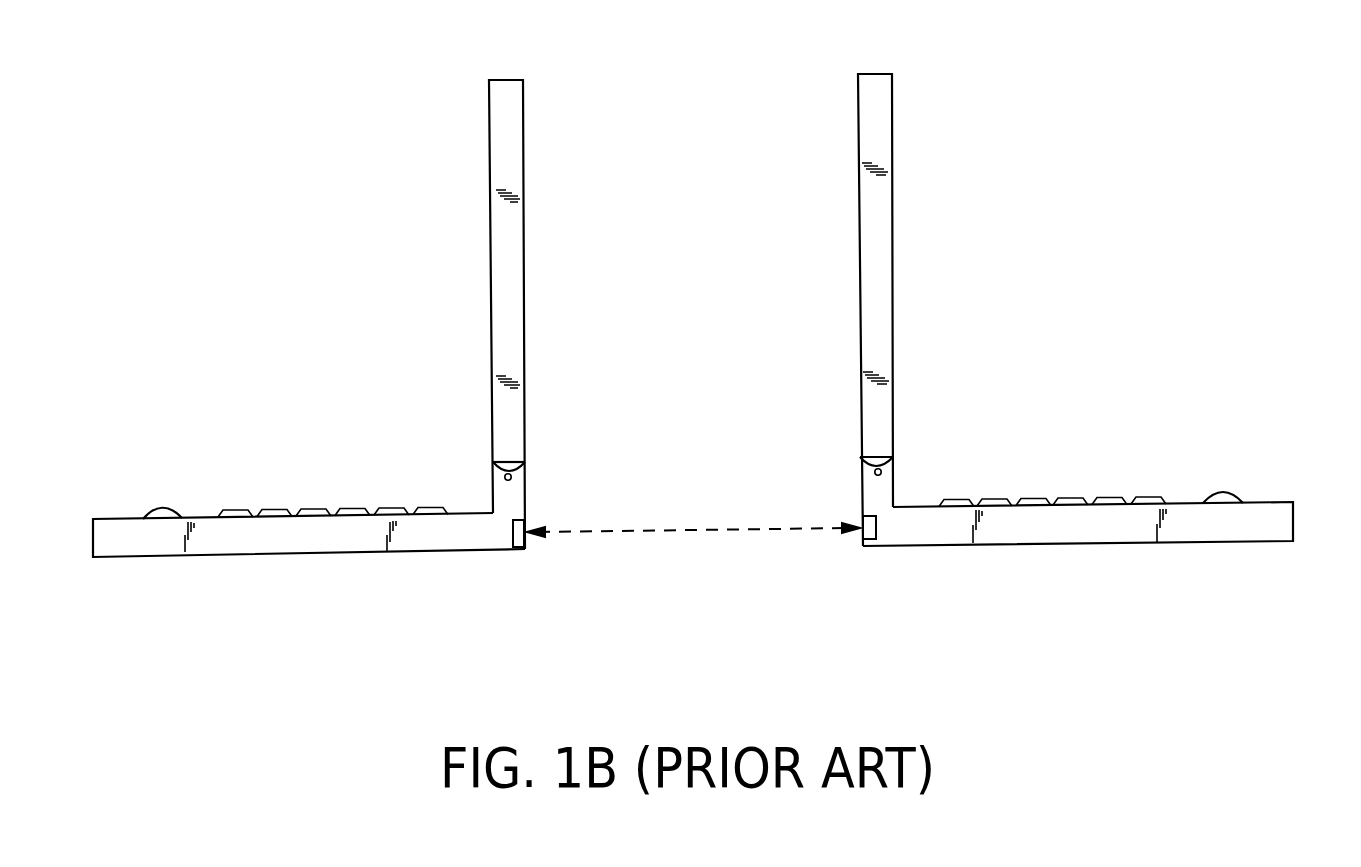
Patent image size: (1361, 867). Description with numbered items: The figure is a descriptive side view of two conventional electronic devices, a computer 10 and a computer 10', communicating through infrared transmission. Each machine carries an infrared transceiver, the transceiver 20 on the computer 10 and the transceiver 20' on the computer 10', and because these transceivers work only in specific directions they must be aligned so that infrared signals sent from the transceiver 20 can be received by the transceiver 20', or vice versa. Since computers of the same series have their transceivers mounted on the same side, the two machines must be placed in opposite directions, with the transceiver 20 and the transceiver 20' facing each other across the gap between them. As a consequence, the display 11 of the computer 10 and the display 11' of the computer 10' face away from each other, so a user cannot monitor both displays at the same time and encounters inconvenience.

The computer 10 is at (355, 308).
The display 11 is at (461, 314).
The infrared transceiver 20 is at (565, 490).
The computer 10' is at (1030, 297).
The display 11' is at (924, 310).
The infrared transceiver 20' is at (821, 484).